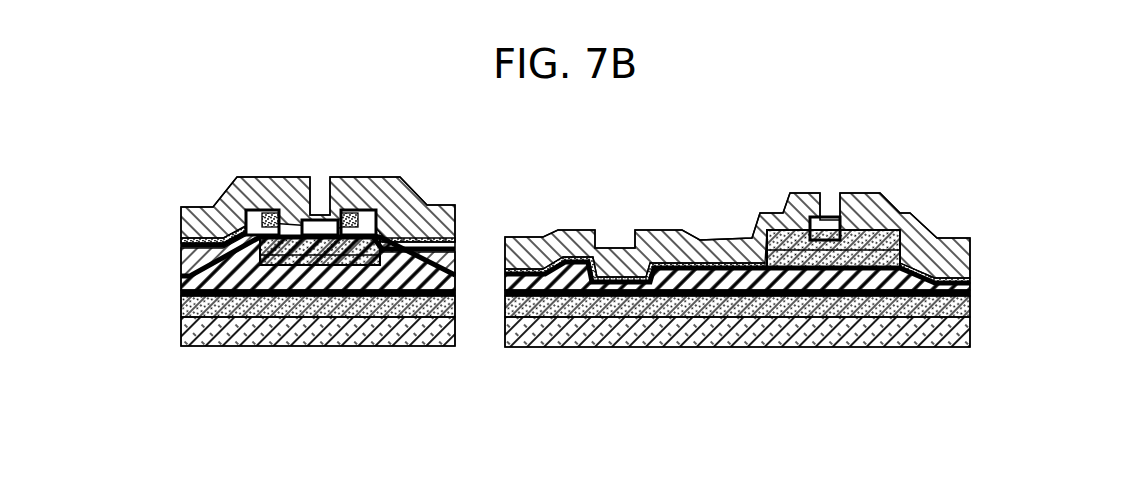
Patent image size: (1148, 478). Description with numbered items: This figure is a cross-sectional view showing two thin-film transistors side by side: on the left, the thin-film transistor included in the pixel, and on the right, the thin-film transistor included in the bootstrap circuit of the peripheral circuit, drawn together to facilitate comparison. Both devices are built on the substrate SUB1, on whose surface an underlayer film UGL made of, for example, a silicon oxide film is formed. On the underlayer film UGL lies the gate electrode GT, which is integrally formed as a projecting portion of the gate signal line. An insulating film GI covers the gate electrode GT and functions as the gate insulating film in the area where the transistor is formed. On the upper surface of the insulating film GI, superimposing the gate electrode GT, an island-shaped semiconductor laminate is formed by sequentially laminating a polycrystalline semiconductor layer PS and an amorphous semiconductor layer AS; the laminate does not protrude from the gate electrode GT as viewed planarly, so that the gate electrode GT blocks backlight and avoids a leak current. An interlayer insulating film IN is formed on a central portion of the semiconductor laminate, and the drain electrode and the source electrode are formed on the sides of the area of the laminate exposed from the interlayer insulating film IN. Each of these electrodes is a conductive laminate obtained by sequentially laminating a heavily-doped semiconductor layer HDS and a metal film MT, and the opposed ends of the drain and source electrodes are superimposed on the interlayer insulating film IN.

The metal film MT is at (258, 213).
The amorphous semiconductor layer AS is at (286, 216).
The polycrystalline semiconductor layer PS is at (350, 224).
The heavily-doped semiconductor layer HDS is at (400, 186).
The interlayer insulating film IN is at (185, 254).
The substrate SUB1 is at (210, 347).
The gate electrode GT is at (298, 300).
The underlayer film UGL is at (388, 318).
The insulating film GI is at (446, 300).